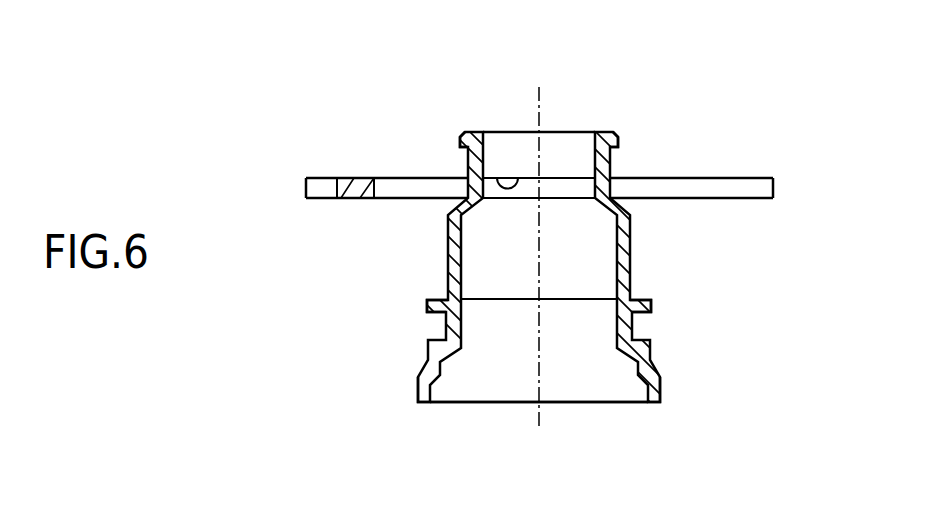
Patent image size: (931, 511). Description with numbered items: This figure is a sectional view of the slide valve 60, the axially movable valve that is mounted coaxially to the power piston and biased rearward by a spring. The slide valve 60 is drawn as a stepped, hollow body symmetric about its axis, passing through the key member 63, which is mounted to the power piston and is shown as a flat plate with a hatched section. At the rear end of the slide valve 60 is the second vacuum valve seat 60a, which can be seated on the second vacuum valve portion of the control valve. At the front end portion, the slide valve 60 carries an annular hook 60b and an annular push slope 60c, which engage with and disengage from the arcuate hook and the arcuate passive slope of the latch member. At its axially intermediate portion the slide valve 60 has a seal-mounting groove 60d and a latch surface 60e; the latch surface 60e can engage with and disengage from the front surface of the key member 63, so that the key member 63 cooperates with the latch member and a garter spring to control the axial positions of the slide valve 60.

The slide valve 60 is at (448, 267).
The second vacuum valve seat 60a is at (652, 403).
The annular hook 60b is at (613, 148).
The annular push slope 60c is at (463, 131).
The seal-mounting groove 60d is at (633, 322).
The latch surface 60e is at (497, 178).
The key member 63 is at (354, 199).